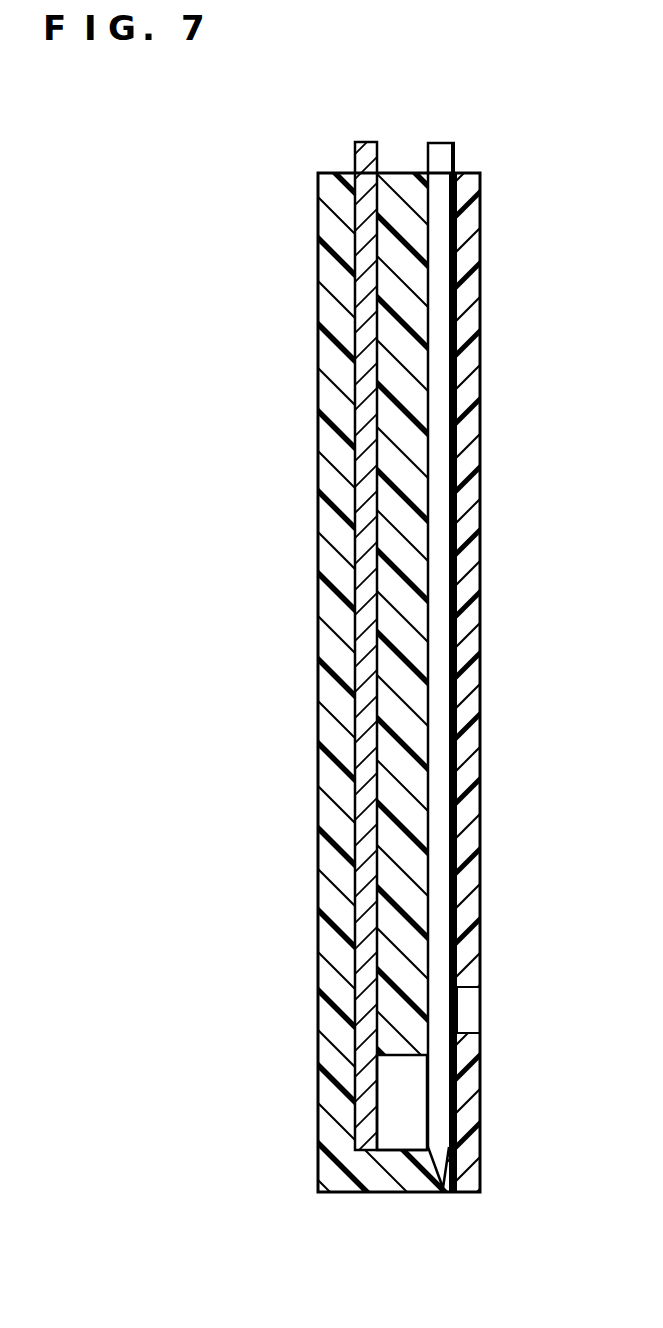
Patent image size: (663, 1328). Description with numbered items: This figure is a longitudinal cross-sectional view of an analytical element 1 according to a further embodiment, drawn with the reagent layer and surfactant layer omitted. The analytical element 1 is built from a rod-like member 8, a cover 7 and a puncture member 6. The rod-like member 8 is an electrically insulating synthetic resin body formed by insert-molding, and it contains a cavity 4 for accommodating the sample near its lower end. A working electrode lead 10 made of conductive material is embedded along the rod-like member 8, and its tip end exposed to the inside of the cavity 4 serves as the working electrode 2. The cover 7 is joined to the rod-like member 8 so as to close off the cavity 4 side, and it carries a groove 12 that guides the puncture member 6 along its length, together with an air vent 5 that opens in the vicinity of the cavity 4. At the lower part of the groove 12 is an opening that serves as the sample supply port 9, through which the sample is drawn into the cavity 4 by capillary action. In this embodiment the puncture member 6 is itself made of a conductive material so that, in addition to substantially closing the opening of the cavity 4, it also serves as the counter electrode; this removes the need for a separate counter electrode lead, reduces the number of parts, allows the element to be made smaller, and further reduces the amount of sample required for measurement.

The analytical element 1 is at (302, 283).
The working electrode 2 is at (370, 1117).
The cavity 4 is at (408, 1137).
The air vent 5 is at (472, 1010).
The puncture member 6 is at (440, 375).
The cover 7 is at (467, 582).
The rod-like member 8 is at (335, 437).
The sample supply port 9 is at (435, 1186).
The working electrode lead 10 is at (367, 141).
The groove 12 is at (458, 256).